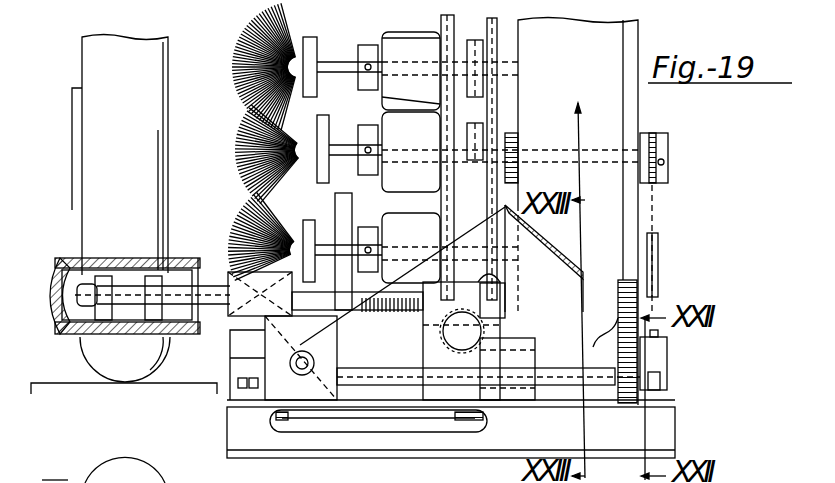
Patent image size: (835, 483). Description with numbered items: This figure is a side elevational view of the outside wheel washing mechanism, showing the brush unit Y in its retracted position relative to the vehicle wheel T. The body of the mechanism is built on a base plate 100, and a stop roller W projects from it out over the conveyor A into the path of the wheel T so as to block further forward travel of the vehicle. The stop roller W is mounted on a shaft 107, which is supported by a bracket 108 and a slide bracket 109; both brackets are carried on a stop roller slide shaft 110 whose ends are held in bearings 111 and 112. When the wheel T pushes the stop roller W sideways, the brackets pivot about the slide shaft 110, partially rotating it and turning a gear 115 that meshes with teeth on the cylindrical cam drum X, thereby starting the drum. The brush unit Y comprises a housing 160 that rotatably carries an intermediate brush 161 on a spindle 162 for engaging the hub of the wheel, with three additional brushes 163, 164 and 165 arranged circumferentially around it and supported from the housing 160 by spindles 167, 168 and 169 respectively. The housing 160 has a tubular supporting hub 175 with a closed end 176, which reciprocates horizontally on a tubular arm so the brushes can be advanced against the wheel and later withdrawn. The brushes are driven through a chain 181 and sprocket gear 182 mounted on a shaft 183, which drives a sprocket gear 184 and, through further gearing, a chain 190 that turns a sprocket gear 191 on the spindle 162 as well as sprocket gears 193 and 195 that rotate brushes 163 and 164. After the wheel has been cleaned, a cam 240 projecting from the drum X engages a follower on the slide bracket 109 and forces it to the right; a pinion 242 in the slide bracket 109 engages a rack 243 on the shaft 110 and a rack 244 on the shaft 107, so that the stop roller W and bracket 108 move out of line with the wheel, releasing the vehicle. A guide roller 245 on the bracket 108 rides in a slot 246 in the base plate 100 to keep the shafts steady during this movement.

The wheel T is at (82, 69).
The stop roller W is at (58, 262).
The brush unit Y is at (236, 118).
The conveyor A is at (44, 378).
The cylindrical cam drum X is at (618, 134).
The base plate 100 is at (672, 446).
The shaft 107 is at (213, 270).
The bracket 108 is at (275, 396).
The slide bracket 109 is at (483, 415).
The stop roller slide shaft 110 is at (406, 360).
The bearing 111 is at (236, 344).
The bearing 112 is at (668, 345).
The gear 115 is at (640, 403).
The housing 160 is at (456, 25).
The intermediate brush 161 is at (246, 142).
The spindle 162 is at (448, 165).
The brush 163 is at (250, 27).
The brush 164 is at (242, 206).
The brush 165 is at (303, 97).
The spindle 167 is at (331, 62).
The spindle 168 is at (320, 258).
The spindle 169 is at (358, 132).
The tubular supporting hub 175 is at (362, 190).
The closed end 176 is at (335, 195).
The chain 181 is at (658, 262).
The sprocket gear 182 is at (660, 186).
The shaft 183 is at (668, 163).
The sprocket gear 184 is at (516, 108).
The chain 190 is at (465, 112).
The sprocket gear 191 is at (467, 130).
The sprocket gear 193 is at (470, 50).
The sprocket gear 195 is at (465, 235).
The cam 240 is at (549, 256).
The pinion 242 is at (440, 332).
The rack 243 is at (551, 350).
The rack 244 is at (325, 295).
The guide roller 245 is at (302, 374).
The slot 246 is at (312, 418).